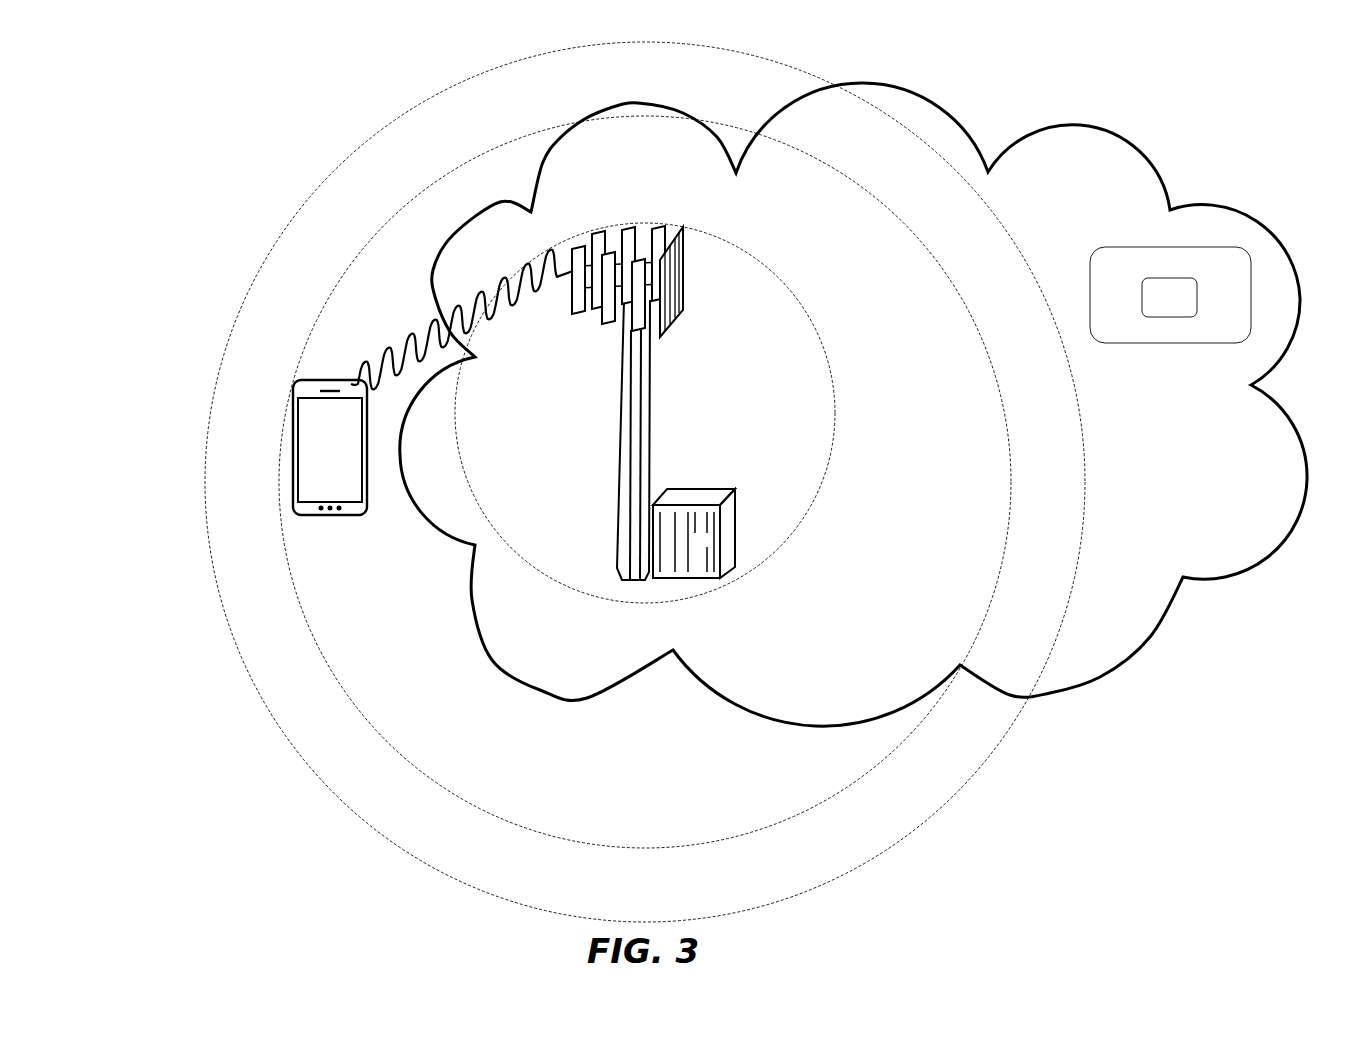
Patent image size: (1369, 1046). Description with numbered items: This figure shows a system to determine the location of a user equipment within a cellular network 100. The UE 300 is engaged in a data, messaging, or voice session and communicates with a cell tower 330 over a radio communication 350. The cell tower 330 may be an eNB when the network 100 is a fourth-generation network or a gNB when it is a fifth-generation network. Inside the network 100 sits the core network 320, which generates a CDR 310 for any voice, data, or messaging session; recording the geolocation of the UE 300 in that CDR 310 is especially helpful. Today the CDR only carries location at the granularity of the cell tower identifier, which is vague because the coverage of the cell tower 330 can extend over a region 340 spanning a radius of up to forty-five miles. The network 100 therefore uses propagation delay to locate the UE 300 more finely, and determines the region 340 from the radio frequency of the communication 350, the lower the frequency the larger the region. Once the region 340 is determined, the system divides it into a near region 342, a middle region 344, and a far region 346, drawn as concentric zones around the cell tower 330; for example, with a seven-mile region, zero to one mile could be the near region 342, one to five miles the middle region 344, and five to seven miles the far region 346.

The network 100 is at (1137, 153).
The UE 300 is at (296, 396).
The CDR 310 is at (1186, 305).
The core network 320 is at (1140, 272).
The cell tower 330 is at (622, 450).
The region 340 is at (645, 482).
The near region 342 is at (835, 415).
The middle region 344 is at (1009, 486).
The far region 346 is at (1086, 486).
The communication 350 is at (360, 362).